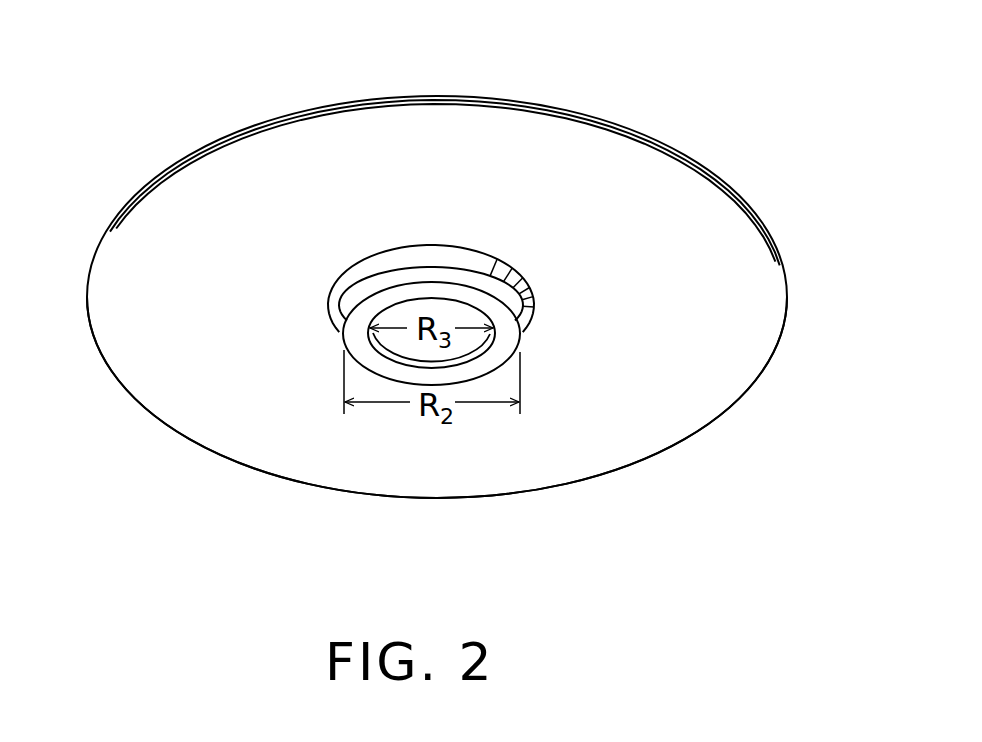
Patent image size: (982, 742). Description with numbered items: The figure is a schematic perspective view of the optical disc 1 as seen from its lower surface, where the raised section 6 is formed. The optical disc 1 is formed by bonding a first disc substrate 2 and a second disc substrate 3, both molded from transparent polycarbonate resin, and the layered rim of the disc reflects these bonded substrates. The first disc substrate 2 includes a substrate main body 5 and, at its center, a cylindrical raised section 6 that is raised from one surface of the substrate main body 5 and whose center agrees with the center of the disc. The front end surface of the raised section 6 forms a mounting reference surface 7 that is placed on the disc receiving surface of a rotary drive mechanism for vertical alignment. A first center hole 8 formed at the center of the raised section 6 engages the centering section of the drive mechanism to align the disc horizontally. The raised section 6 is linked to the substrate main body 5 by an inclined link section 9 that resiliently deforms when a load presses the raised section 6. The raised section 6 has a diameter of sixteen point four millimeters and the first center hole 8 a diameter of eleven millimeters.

The optical disc 1 is at (644, 118).
The first disc substrate 2 is at (745, 207).
The second disc substrate 3 is at (736, 188).
The substrate main body 5 is at (749, 336).
The raised section 6 is at (505, 302).
The mounting reference surface 7 is at (508, 338).
The first center hole 8 is at (392, 316).
The link section 9 is at (490, 265).